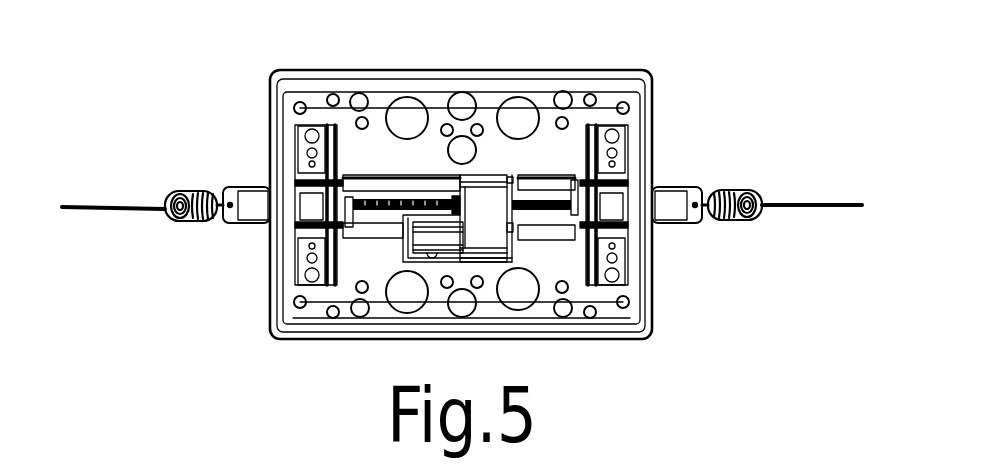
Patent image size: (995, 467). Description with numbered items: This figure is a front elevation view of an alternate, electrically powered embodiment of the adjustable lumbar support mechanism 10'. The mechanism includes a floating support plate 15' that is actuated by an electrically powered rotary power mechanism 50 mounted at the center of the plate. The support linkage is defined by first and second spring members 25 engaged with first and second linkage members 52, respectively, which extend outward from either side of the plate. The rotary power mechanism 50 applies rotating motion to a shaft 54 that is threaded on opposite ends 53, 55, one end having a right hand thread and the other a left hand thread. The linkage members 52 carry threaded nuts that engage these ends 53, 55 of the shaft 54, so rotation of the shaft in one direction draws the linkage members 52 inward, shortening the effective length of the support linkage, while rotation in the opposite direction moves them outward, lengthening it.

The lumbar support mechanism 10' is at (518, 114).
The floating support plate 15' is at (461, 175).
The spring members 25 is at (112, 211).
The rotary power mechanism 50 is at (488, 230).
The linkage members 52 is at (232, 222).
The threaded end of shaft 53 is at (332, 238).
The shaft 54 is at (388, 200).
The threaded end of shaft 55 is at (628, 239).